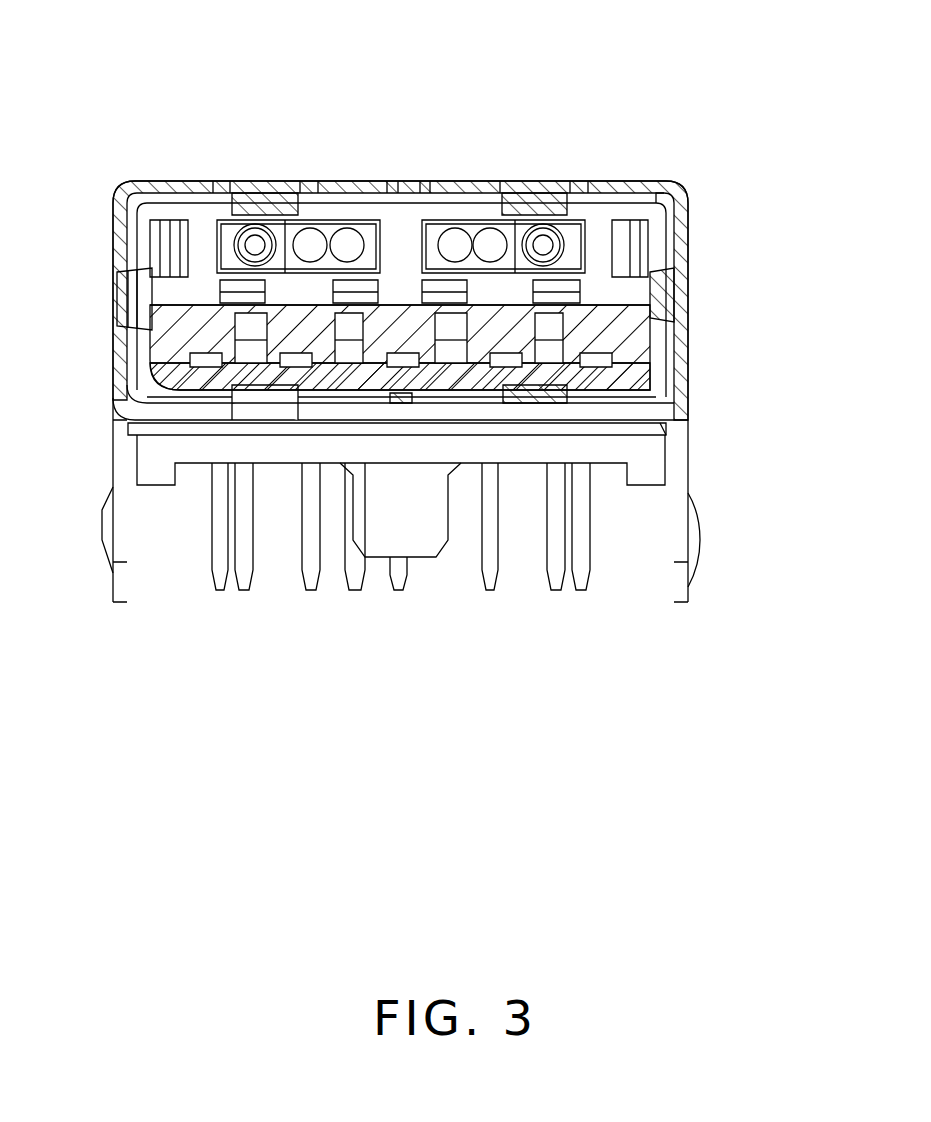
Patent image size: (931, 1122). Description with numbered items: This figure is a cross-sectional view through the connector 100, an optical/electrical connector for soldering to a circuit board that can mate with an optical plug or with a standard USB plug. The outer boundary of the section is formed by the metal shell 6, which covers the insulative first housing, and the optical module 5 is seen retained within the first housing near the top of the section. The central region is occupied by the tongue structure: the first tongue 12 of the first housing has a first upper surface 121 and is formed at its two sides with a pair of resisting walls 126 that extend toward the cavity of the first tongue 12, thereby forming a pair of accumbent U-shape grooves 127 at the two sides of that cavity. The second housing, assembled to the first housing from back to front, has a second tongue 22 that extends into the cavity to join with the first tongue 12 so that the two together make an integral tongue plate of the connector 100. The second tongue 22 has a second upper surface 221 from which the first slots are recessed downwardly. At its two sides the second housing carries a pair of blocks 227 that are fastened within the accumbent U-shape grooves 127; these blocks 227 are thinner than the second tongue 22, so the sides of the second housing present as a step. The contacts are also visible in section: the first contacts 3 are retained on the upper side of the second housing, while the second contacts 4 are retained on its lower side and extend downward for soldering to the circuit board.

The connector 100 is at (232, 146).
The first tongue 12 is at (598, 380).
The first upper surface 121 is at (655, 292).
The resisting walls 126 is at (613, 303).
The accumbent U-shape grooves 127 is at (630, 355).
The second tongue 22 is at (585, 323).
The second upper surface 221 is at (507, 303).
The blocks 227 is at (603, 367).
The first contacts 3 is at (242, 287).
The second contacts 4 is at (200, 360).
The optical module 5 is at (330, 227).
The metal shell 6 is at (678, 460).